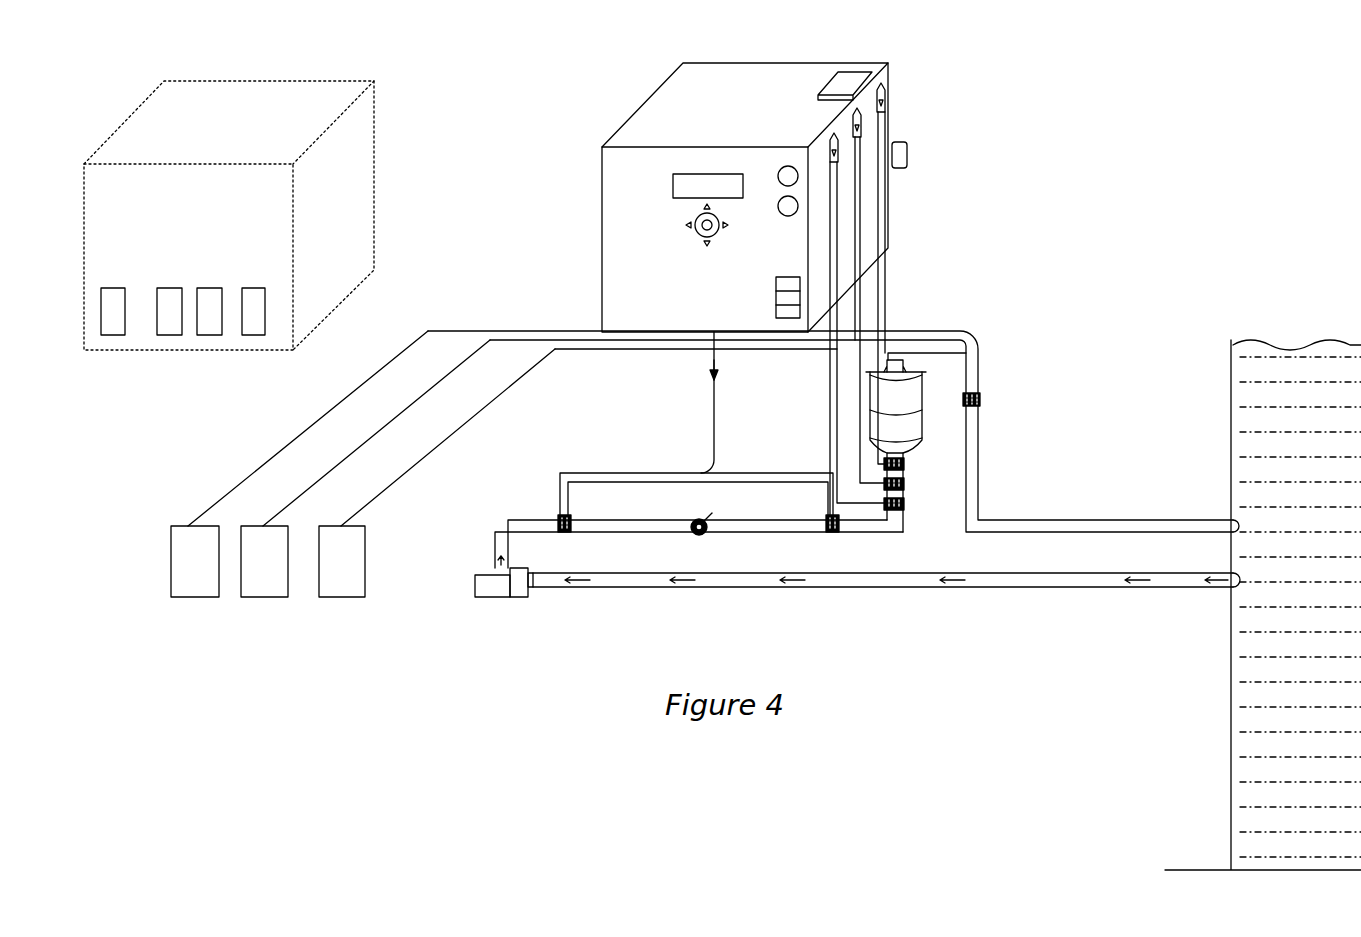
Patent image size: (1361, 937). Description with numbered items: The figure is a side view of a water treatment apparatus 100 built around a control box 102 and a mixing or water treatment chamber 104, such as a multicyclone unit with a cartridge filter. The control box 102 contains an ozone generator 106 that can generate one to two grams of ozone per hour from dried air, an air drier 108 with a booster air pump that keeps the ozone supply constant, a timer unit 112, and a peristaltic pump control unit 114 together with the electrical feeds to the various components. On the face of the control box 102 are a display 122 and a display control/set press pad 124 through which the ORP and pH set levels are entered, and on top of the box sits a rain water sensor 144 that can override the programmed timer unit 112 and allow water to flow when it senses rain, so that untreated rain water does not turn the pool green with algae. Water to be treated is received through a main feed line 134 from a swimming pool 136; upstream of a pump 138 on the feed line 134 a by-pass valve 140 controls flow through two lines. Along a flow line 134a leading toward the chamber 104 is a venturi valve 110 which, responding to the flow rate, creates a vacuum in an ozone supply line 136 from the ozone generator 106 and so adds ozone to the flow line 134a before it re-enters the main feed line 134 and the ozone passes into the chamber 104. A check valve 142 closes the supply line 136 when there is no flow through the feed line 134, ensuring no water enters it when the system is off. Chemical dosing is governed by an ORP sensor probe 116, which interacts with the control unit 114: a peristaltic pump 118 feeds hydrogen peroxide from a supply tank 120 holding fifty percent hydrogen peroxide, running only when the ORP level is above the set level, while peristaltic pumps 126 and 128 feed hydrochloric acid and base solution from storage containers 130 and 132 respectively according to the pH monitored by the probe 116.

The water treatment apparatus 100 is at (1035, 203).
The control box 102 is at (374, 152).
The mixing or water treatment chamber 104 is at (922, 430).
The ozone generator 106 is at (113, 335).
The air drier 108 is at (170, 335).
The venturi valve 110 is at (560, 516).
The timer unit 112 is at (210, 335).
The peristaltic pump control unit 114 is at (254, 335).
The ORP sensor probe 116 is at (980, 400).
The peristaltic pump 118 is at (838, 153).
The supply tank 120 is at (195, 597).
The display 122 is at (673, 196).
The display control/set press pad 124 is at (693, 228).
The peristaltic pump 126 is at (888, 120).
The peristaltic pump 128 is at (888, 95).
The storage container 130 is at (267, 597).
The storage container 132 is at (345, 597).
The main feed line 134 is at (645, 520).
The flow line 134a is at (777, 471).
The swimming pool 136 is at (713, 418).
The pump 138 is at (488, 598).
The by-pass valve 140 is at (700, 537).
The check valve 142 is at (716, 375).
The rain water sensor 144 is at (848, 83).